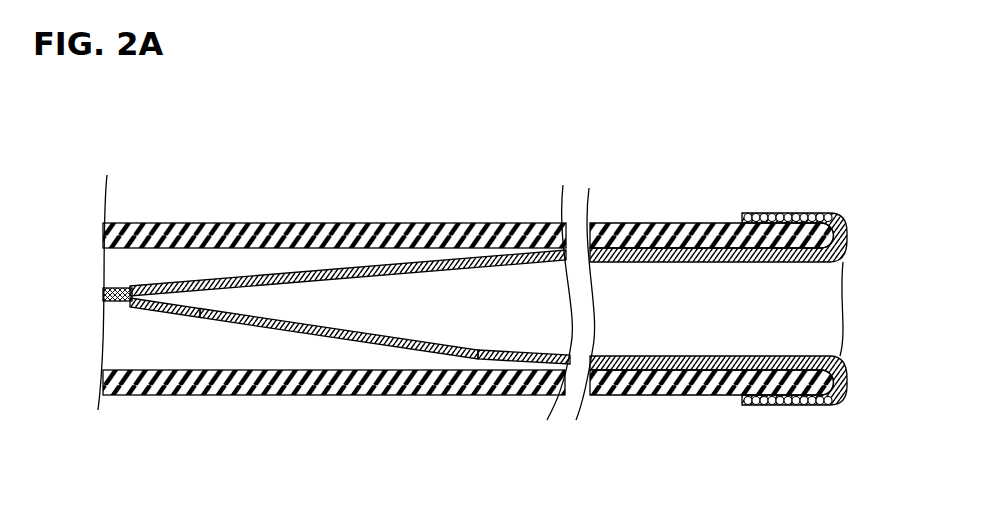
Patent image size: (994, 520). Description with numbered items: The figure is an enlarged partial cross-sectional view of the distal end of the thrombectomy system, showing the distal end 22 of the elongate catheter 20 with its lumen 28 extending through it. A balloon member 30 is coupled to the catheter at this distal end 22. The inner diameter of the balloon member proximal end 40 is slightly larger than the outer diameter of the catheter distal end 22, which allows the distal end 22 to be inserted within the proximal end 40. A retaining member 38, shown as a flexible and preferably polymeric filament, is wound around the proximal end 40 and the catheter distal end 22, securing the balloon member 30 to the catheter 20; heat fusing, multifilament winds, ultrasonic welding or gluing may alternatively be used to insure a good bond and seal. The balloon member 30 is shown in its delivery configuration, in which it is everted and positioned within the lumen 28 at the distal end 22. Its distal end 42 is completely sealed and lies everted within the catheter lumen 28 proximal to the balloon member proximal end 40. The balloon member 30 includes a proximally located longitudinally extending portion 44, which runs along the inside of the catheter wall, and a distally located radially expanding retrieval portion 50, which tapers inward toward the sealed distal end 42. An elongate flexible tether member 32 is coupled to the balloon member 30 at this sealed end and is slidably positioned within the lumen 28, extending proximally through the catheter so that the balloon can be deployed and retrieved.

The elongate catheter 20 is at (317, 223).
The distal end 22 is at (650, 223).
The retaining member 38 is at (775, 212).
The lumen 28 is at (336, 308).
The tether member 32 is at (107, 288).
The distal end of balloon member 42 is at (162, 303).
The radially expanding retrieval portion 50 is at (287, 328).
The balloon member 30 is at (487, 357).
The longitudinally extending portion 44 is at (620, 356).
The proximal end of balloon member 40 is at (710, 368).